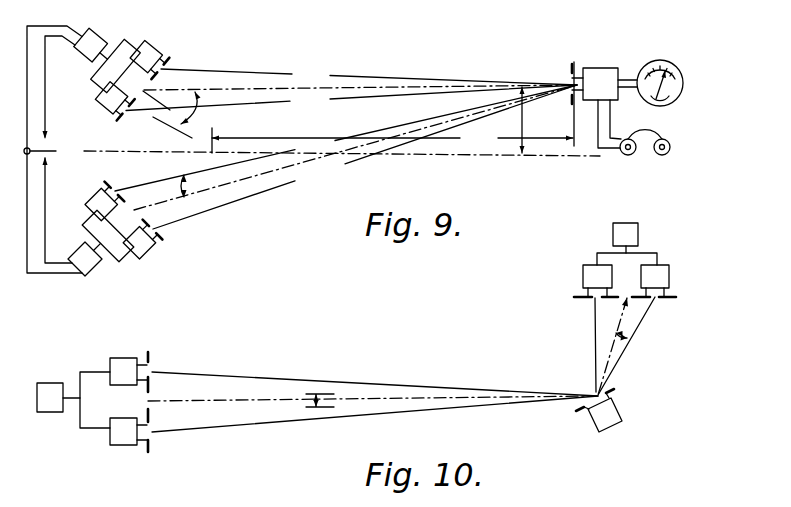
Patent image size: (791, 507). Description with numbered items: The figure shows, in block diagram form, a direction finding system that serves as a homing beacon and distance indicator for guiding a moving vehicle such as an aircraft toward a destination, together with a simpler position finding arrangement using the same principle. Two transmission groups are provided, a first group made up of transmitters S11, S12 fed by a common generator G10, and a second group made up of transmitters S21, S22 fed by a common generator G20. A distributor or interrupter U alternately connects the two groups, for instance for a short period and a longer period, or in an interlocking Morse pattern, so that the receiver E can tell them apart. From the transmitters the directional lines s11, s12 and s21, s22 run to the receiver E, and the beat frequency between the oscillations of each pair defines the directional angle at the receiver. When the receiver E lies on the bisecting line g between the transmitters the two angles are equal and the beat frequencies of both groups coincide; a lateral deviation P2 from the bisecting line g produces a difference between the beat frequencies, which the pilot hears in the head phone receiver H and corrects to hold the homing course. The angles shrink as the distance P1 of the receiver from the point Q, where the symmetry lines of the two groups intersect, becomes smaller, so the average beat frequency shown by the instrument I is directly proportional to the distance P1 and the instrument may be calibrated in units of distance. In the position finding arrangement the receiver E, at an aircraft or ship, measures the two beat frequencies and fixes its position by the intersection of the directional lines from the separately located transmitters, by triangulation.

In FIG. 9, the common generator G10 is at (96, 40).
In FIG. 10, the common generator G10 is at (56, 375).
In FIG. 9, the transmitter S11 is at (157, 42).
In FIG. 10, the transmitter S11 is at (128, 350).
In FIG. 9, the transmitter S12 is at (109, 101).
In FIG. 10, the transmitter S12 is at (124, 445).
In FIG. 9, the common generator G20 is at (90, 267).
In FIG. 10, the common generator G20 is at (636, 233).
In FIG. 9, the transmitter S21 is at (99, 199).
In FIG. 10, the transmitter S21 is at (590, 276).
In FIG. 9, the transmitter S22 is at (142, 250).
In FIG. 10, the transmitter S22 is at (662, 278).
In FIG. 9, the directional line from transmitter S11 s11 is at (369, 75).
In FIG. 9, the directional line from transmitter S12 s12 is at (351, 99).
In FIG. 9, the directional line from transmitter S21 s21 is at (346, 138).
In FIG. 9, the directional line from transmitter S22 s22 is at (365, 157).
In FIG. 9, the distributor or interrupter U is at (312, 152).
In FIG. 9, the intersection point of symmetry lines Q is at (208, 150).
In FIG. 9, the distance from point Q P1 is at (392, 139).
In FIG. 9, the lateral deviation P2 is at (527, 120).
In FIG. 9, the bisecting line g is at (407, 155).
In FIG. 9, the receiver E is at (598, 72).
In FIG. 10, the receiver E is at (610, 421).
In FIG. 9, the indicating instrument I is at (682, 95).
In FIG. 9, the head phone receiver H is at (662, 155).